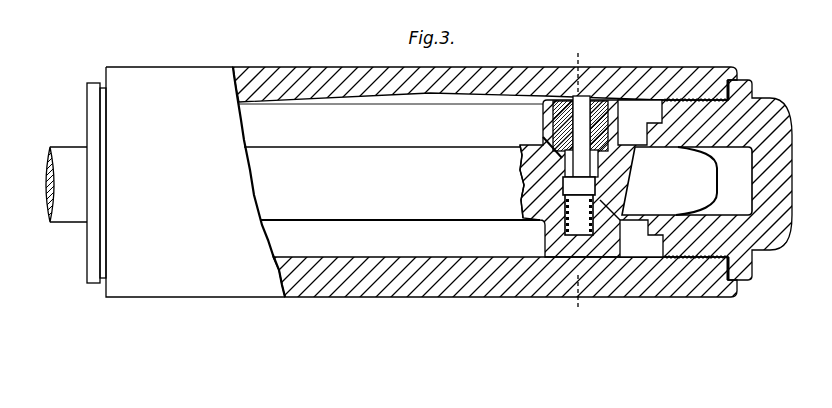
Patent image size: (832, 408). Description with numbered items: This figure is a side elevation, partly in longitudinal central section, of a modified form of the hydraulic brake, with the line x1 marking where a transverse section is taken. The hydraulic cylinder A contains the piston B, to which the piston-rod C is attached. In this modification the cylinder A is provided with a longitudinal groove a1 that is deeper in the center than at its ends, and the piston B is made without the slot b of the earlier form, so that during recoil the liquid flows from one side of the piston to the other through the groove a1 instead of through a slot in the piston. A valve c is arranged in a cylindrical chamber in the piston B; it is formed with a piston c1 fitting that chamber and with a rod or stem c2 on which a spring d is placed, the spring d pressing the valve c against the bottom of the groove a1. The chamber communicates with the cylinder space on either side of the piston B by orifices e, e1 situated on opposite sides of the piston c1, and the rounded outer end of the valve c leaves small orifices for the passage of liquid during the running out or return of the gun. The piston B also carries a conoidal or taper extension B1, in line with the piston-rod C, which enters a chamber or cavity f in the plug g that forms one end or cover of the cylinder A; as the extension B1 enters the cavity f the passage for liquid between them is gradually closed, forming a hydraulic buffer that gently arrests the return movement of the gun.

The hydraulic cylinder A is at (416, 178).
The piston B is at (545, 240).
The conoidal or taper extension B1 is at (695, 181).
The piston-rod C is at (293, 182).
The longitudinal groove a1 is at (391, 114).
The slot b is at (556, 101).
The valve c is at (581, 136).
The piston of the valve c1 is at (579, 186).
The rod or stem c2 is at (579, 215).
The spring d is at (640, 178).
The orifice e is at (542, 138).
The orifice e1 is at (600, 234).
The chamber or cavity f is at (687, 181).
The plug g is at (416, 182).
The section line x1 is at (575, 183).